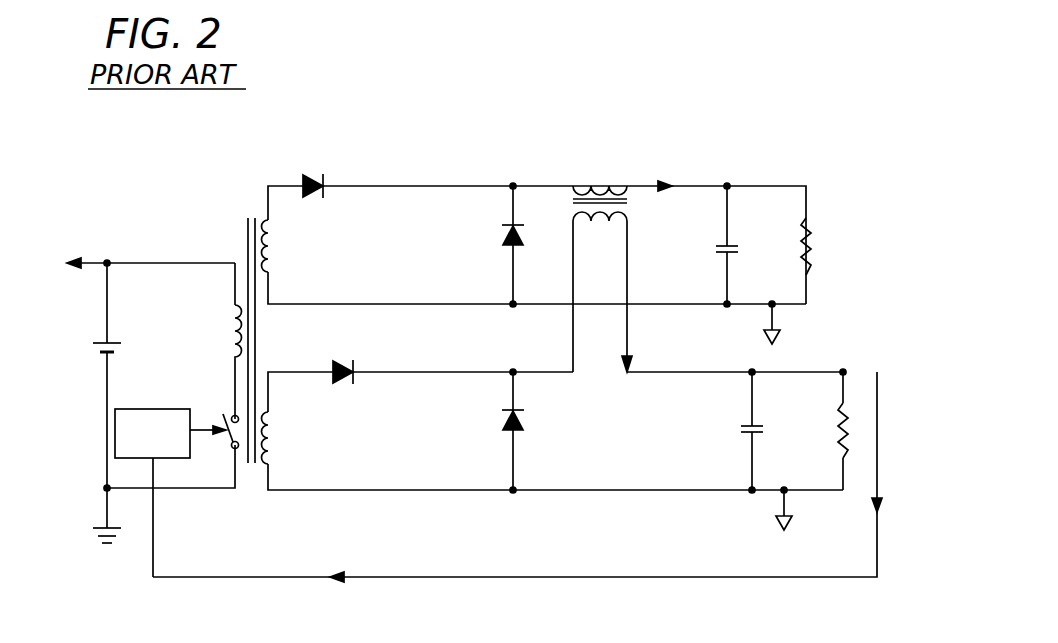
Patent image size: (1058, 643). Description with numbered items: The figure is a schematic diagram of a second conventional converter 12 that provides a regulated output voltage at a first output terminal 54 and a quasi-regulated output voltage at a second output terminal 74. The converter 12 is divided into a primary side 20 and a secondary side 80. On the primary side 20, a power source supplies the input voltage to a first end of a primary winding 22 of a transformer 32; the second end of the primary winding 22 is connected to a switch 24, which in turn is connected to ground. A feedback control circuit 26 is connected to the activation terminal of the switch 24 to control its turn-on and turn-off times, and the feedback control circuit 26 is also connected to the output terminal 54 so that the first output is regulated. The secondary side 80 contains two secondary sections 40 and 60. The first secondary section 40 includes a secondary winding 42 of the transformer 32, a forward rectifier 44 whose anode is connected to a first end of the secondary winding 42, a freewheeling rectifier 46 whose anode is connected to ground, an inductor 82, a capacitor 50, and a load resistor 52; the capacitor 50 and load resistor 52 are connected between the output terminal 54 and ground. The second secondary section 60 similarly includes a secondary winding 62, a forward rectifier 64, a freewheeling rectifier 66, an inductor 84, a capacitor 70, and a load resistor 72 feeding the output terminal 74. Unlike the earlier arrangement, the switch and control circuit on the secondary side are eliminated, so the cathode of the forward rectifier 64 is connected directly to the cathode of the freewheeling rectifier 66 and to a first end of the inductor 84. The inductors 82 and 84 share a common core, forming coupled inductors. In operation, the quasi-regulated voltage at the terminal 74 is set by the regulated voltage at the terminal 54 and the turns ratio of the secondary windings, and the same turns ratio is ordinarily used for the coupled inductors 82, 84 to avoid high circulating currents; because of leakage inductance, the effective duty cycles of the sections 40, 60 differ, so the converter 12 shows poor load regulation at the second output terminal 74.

The second conventional converter 12 is at (800, 131).
The primary side 20 is at (142, 263).
The primary winding 22 is at (228, 308).
The switch 24 is at (228, 410).
The feedback control circuit 26 is at (165, 409).
The transformer 32 is at (240, 213).
The first secondary section 40 is at (408, 490).
The secondary winding 42 is at (274, 418).
The forward rectifier 44 is at (353, 360).
The freewheeling rectifier 46 is at (500, 418).
The capacitor 50 is at (738, 430).
The load resistor 52 is at (830, 428).
The output terminal 54 is at (744, 374).
The second secondary section 60 is at (418, 186).
The secondary winding 62 is at (272, 262).
The forward rectifier 64 is at (310, 172).
The freewheeling rectifier 66 is at (500, 240).
The capacitor 70 is at (708, 252).
The load resistor 72 is at (816, 240).
The output terminal 74 is at (727, 186).
The secondary side 80 is at (560, 512).
The inductor 82 is at (590, 222).
The inductor 84 is at (600, 186).